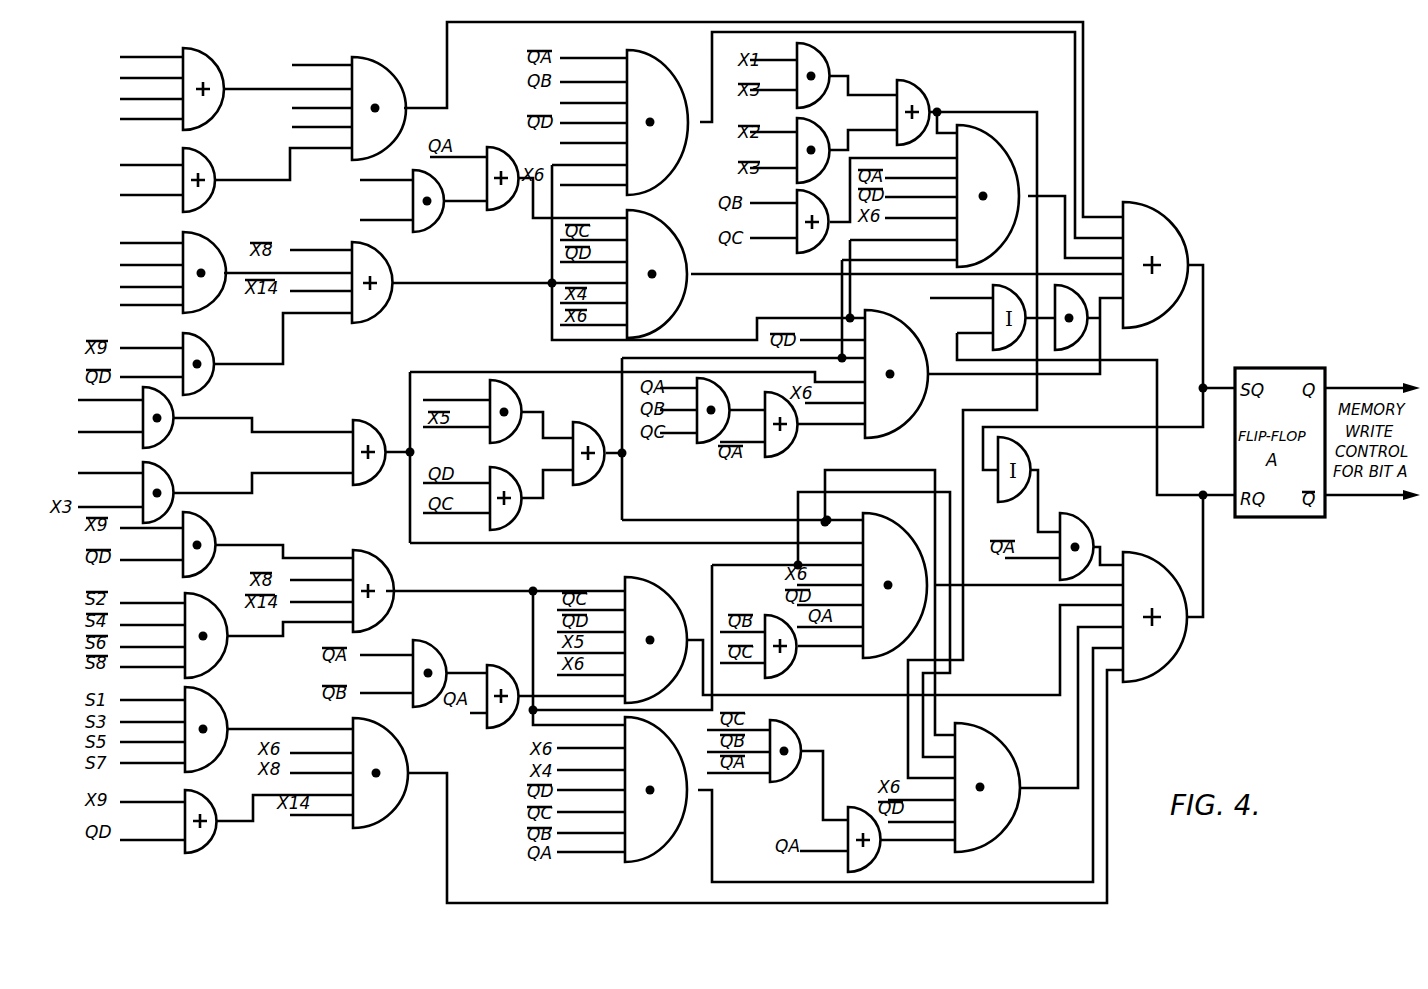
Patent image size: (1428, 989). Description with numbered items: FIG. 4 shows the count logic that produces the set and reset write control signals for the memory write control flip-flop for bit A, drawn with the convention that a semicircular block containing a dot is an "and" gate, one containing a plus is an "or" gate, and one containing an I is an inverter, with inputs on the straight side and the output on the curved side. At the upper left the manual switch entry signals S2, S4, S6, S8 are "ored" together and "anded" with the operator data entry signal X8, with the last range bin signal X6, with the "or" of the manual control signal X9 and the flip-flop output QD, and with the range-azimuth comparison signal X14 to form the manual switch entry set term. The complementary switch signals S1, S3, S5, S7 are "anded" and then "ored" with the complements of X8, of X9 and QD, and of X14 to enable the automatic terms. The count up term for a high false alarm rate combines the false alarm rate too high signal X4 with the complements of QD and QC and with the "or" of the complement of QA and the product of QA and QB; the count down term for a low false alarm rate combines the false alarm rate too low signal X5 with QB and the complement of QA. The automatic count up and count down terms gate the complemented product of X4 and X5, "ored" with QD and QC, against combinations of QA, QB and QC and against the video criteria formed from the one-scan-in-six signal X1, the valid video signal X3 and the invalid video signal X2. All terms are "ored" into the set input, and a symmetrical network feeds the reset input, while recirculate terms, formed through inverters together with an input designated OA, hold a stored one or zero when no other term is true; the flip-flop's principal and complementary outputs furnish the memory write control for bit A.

The manual switch entry signal S2 is at (134, 57).
The manual switch entry signal S4 is at (134, 78).
The manual switch entry signal S6 is at (134, 99).
The manual switch entry signal S8 is at (134, 119).
The manual code bit control signal X9 is at (133, 165).
The principal output of flip-flop D QD is at (134, 195).
The manual switch entry signal S1 is at (108, 236).
The manual switch entry signal S3 is at (108, 258).
The manual switch entry signal S5 is at (108, 280).
The manual switch entry signal S7 is at (108, 298).
The last range bin signal X6 is at (304, 65).
The operator data entry signal X8 is at (304, 108).
The real time range-azimuth comparison signal X14 is at (304, 127).
The principal output of flip-flop A QA is at (370, 180).
The principal output of flip-flop B QB is at (370, 217).
The principal output of flip-flop C QC is at (552, 96).
The false alarm rate too low signal X5 is at (576, 142).
The one-scan-in-six signal X1 is at (96, 400).
The valid video detected signal X3 is at (96, 432).
The invalid video detected signal X2 is at (96, 473).
The false alarm rate too high signal X4 is at (450, 385).
The OA signal input OA is at (949, 298).